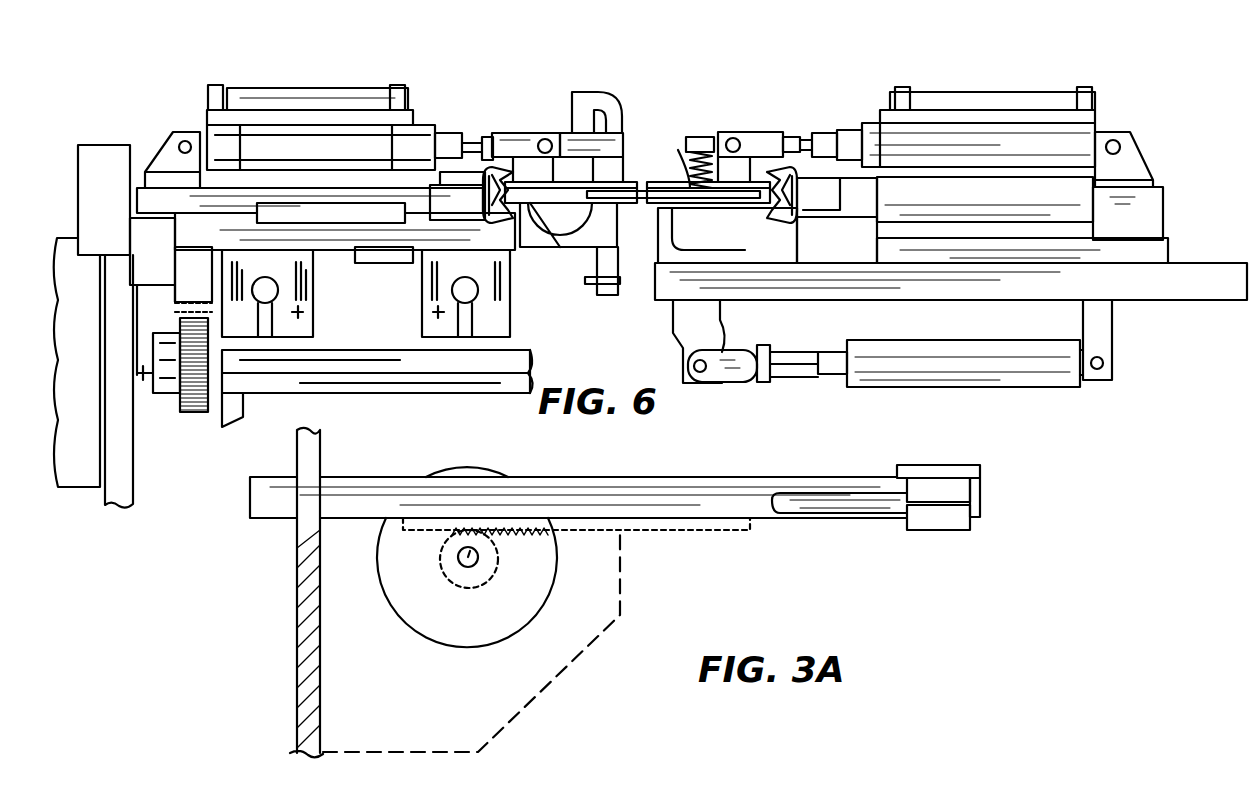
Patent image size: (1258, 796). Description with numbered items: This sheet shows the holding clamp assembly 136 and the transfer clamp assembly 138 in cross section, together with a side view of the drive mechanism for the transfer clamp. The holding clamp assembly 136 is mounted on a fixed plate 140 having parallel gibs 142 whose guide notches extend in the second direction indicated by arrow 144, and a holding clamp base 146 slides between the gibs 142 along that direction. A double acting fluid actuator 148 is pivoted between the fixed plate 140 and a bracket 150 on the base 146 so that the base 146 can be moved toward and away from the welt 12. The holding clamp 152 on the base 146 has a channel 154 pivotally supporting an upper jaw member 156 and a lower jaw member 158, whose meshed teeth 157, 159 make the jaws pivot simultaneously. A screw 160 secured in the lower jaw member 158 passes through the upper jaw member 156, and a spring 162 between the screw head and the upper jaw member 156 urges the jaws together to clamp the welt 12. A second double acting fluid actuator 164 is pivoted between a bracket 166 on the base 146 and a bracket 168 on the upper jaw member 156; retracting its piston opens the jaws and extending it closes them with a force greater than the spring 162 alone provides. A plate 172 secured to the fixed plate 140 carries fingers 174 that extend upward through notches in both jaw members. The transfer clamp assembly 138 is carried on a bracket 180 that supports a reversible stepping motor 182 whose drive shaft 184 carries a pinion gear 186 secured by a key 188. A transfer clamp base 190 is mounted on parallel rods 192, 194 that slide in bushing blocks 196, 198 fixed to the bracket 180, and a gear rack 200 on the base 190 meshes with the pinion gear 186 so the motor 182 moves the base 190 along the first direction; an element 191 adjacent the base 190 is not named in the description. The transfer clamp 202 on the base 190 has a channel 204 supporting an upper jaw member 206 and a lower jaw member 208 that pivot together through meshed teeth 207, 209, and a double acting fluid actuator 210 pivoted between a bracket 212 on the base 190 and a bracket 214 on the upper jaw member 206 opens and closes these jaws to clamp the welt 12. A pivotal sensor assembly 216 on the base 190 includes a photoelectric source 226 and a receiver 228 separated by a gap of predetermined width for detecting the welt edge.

In FIG. 6, the welt 12 is at (600, 197).
In FIG. 6, the holding clamp assembly 136 is at (876, 82).
In FIG. 6, the transfer clamp assembly 138 is at (442, 98).
In FIG. 6, the fixed plate 140 is at (1207, 282).
In FIG. 6, the gibs 142 is at (1150, 257).
In FIG. 6, the arrow 144 is at (1172, 403).
In FIG. 6, the holding clamp base 146 is at (1148, 208).
In FIG. 6, the double acting fluid actuator 148 is at (1000, 355).
In FIG. 6, the bracket 150 is at (692, 330).
In FIG. 6, the holding clamp 152 is at (706, 122).
In FIG. 6, the channel 154 is at (806, 147).
In FIG. 6, the upper jaw member 156 is at (647, 183).
In FIG. 6, the meshed teeth 157 is at (810, 190).
In FIG. 6, the lower jaw member 158 is at (696, 205).
In FIG. 6, the meshed teeth 159 is at (800, 218).
In FIG. 6, the screw 160 is at (736, 140).
In FIG. 6, the spring 162 is at (684, 152).
In FIG. 6, the double acting fluid actuator 164 is at (1045, 163).
In FIG. 6, the bracket 166 is at (1125, 165).
In FIG. 6, the bracket 168 is at (740, 160).
In FIG. 6, the plate 172 is at (745, 258).
In FIG. 6, the fingers 174 is at (678, 230).
In FIG. 6, the bracket 180 is at (364, 362).
In FIG. 6, the reversible stepping motor 182 is at (80, 466).
In FIG. 3A, the reversible stepping motor 182 is at (425, 635).
In FIG. 6, the drive shaft 184 is at (143, 372).
In FIG. 3A, the drive shaft 184 is at (466, 566).
In FIG. 6, the pinion gear 186 is at (197, 412).
In FIG. 3A, the pinion gear 186 is at (484, 570).
In FIG. 3A, the key 188 is at (465, 548).
In FIG. 6, the transfer clamp base 190 is at (150, 200).
In FIG. 6, the plate 191 is at (190, 272).
In FIG. 3A, the plate 191 is at (632, 490).
In FIG. 6, the rod 192 is at (268, 290).
In FIG. 3A, the rod 192 is at (843, 508).
In FIG. 6, the rod 194 is at (458, 290).
In FIG. 6, the bushing block 196 is at (300, 312).
In FIG. 6, the bushing block 198 is at (440, 312).
In FIG. 6, the gear rack 200 is at (178, 308).
In FIG. 3A, the gear rack 200 is at (658, 528).
In FIG. 6, the transfer clamp 202 is at (627, 215).
In FIG. 6, the channel 204 is at (492, 162).
In FIG. 6, the upper jaw member 206 is at (565, 183).
In FIG. 6, the meshed teeth 207 is at (450, 180).
In FIG. 6, the lower jaw member 208 is at (568, 235).
In FIG. 6, the meshed teeth 209 is at (486, 228).
In FIG. 6, the double acting fluid actuator 210 is at (320, 125).
In FIG. 6, the bracket 212 is at (165, 165).
In FIG. 6, the bracket 214 is at (540, 165).
In FIG. 6, the pivotal sensor assembly 216 is at (638, 105).
In FIG. 6, the photoelectric source 226 is at (633, 172).
In FIG. 6, the receiver 228 is at (605, 270).